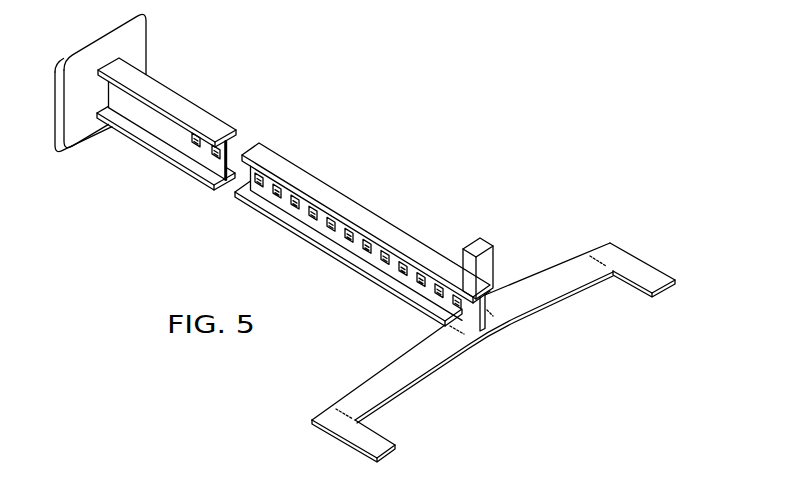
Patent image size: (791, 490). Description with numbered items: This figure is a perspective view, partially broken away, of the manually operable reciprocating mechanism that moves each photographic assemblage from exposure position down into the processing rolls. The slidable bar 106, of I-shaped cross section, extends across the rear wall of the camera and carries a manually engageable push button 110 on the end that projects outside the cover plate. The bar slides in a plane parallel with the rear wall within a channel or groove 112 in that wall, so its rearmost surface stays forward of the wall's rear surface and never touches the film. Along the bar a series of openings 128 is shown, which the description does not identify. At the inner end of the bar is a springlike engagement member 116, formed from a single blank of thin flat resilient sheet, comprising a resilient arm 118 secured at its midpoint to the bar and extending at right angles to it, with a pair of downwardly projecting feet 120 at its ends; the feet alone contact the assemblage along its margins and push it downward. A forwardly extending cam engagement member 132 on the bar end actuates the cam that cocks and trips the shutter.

The slidable bar 106 is at (190, 101).
The push button 110 is at (93, 40).
The channel or groove 112 is at (362, 237).
The springlike engagement member 116 is at (495, 350).
The resilient arm 118 is at (548, 288).
The feet 120 is at (652, 276).
The apertures in rail web 128 is at (400, 270).
The cam engagement member 132 is at (483, 242).